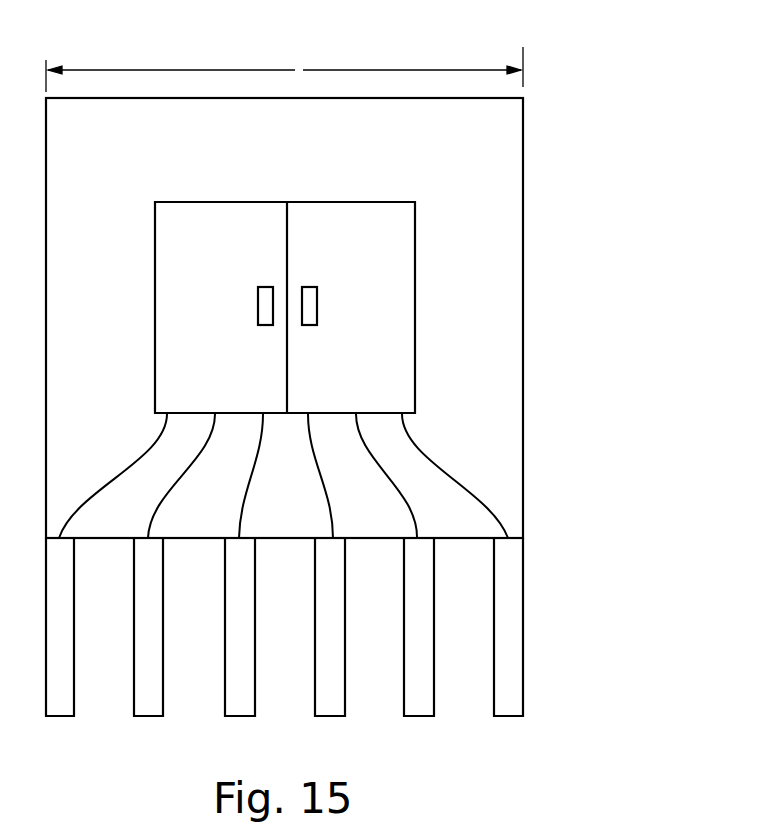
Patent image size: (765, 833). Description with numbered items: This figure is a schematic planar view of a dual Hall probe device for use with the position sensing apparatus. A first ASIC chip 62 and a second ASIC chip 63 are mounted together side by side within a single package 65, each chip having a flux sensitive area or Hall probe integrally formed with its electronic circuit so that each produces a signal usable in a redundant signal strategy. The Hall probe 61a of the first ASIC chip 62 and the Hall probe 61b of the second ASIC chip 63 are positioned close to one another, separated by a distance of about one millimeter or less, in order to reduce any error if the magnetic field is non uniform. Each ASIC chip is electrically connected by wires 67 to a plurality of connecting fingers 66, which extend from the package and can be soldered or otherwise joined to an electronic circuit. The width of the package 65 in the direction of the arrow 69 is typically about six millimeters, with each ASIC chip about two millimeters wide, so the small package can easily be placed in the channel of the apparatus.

The package 65 is at (524, 135).
The arrow 69 is at (293, 70).
The first ASIC chip 62 is at (231, 243).
The second ASIC chip 63 is at (368, 243).
The Hall probe 61a is at (258, 305).
The Hall probe 61b is at (317, 305).
The wires 67 is at (121, 478).
The connecting fingers 66 is at (62, 700).